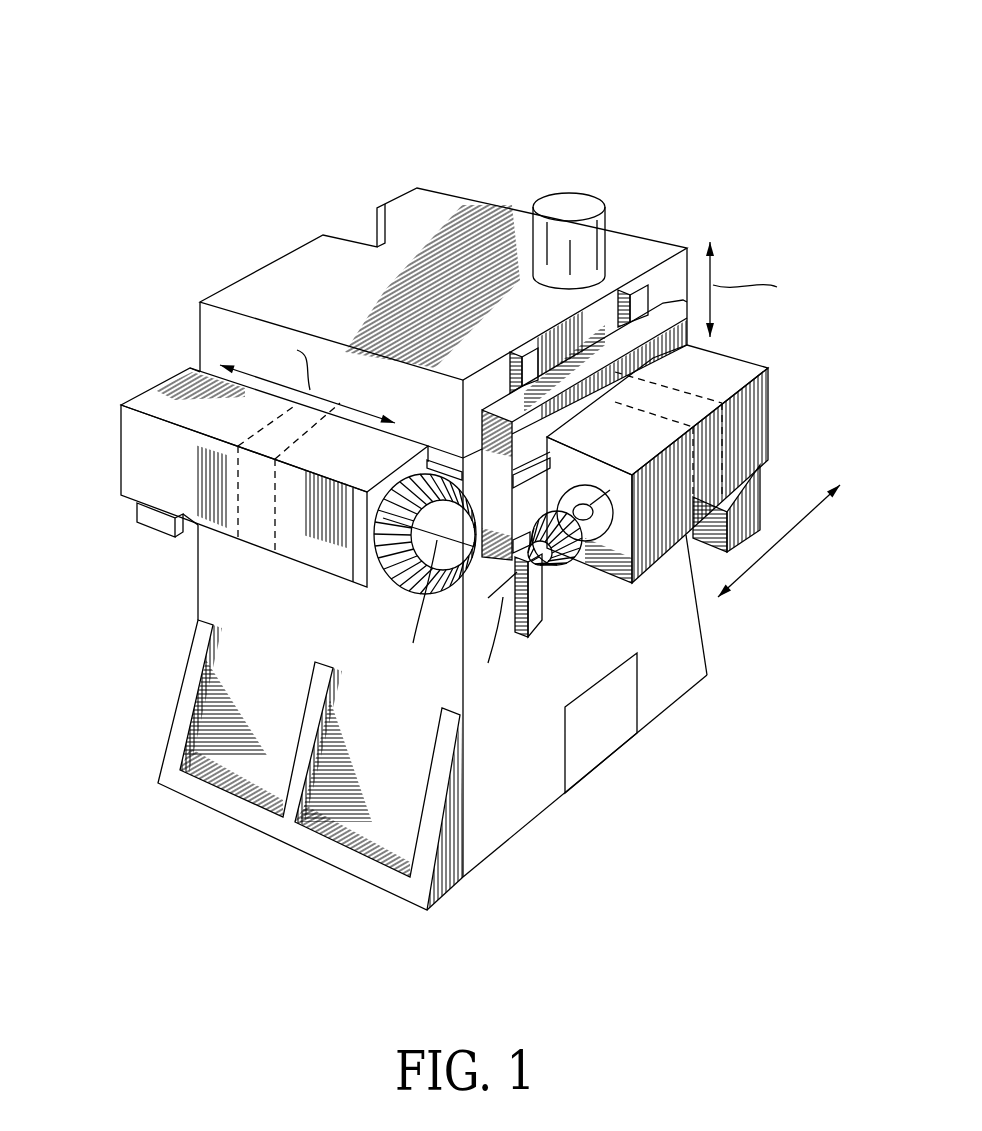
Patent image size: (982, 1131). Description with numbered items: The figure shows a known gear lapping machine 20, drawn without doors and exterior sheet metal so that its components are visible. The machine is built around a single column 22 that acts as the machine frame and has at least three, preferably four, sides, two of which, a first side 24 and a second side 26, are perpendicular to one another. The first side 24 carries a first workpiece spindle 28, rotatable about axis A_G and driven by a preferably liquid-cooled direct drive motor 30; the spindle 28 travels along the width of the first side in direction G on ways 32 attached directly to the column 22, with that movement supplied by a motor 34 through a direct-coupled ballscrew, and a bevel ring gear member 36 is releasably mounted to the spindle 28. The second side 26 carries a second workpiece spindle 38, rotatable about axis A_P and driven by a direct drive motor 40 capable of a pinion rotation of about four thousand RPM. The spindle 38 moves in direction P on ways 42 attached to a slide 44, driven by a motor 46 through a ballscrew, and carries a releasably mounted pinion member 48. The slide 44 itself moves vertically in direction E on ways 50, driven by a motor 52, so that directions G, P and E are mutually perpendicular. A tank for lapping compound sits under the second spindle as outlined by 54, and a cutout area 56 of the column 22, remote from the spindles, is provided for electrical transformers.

The gear lapping machine 20 is at (437, 128).
The column 22 is at (513, 200).
The first side 24 is at (210, 598).
The second side 26 is at (508, 807).
The first workpiece spindle 28 is at (172, 473).
The direct drive motor 30 is at (253, 537).
The ways 32 is at (446, 458).
The motor 34 is at (125, 508).
The bevel ring gear member 36 is at (393, 592).
The second workpiece spindle 38 is at (762, 410).
The direct drive motor 40 is at (700, 403).
The ways 42 is at (523, 462).
The slide 44 is at (663, 302).
The motor 46 is at (750, 503).
The pinion member 48 is at (563, 563).
The ways 50 is at (540, 622).
The motor 52 is at (590, 203).
The tank 54 is at (602, 740).
The cutout area 56 is at (363, 230).